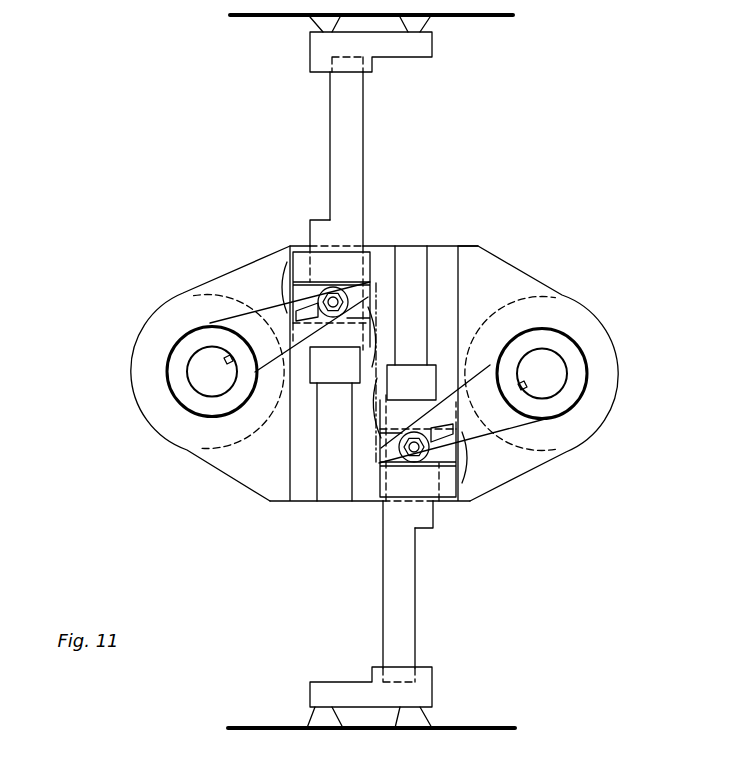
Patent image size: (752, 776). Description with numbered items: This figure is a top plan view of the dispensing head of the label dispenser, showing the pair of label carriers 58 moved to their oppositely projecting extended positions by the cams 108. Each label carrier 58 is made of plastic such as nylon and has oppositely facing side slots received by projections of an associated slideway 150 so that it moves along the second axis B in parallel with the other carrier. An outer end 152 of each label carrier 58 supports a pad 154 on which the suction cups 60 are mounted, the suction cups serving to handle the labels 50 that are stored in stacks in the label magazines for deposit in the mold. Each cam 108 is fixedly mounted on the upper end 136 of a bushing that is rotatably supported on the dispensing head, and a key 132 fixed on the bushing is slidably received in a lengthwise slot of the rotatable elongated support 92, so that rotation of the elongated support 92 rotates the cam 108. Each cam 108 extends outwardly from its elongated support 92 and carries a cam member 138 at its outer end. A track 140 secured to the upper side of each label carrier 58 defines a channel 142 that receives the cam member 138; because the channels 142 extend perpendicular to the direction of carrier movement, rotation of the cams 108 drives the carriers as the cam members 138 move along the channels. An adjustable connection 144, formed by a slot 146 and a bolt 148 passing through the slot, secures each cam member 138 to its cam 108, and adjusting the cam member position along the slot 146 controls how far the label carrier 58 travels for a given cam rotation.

The labels 50 is at (490, 22).
The suction cups 60 is at (413, 22).
The pad 154 is at (418, 52).
The outer end 152 is at (362, 95).
The label carriers 58 is at (304, 231).
The cam member 138 is at (386, 241).
The channel 142 is at (372, 373).
The bolt 148 is at (373, 373).
The track 140 is at (290, 247).
The adjustable connection 144 is at (346, 274).
The slot 146 is at (312, 300).
The cams 108 is at (215, 308).
The upper ends 136 is at (170, 388).
The elongated support 92 is at (202, 388).
The key 132 is at (225, 358).
The slideway 150 is at (318, 476).
The second axis B is at (377, 352).